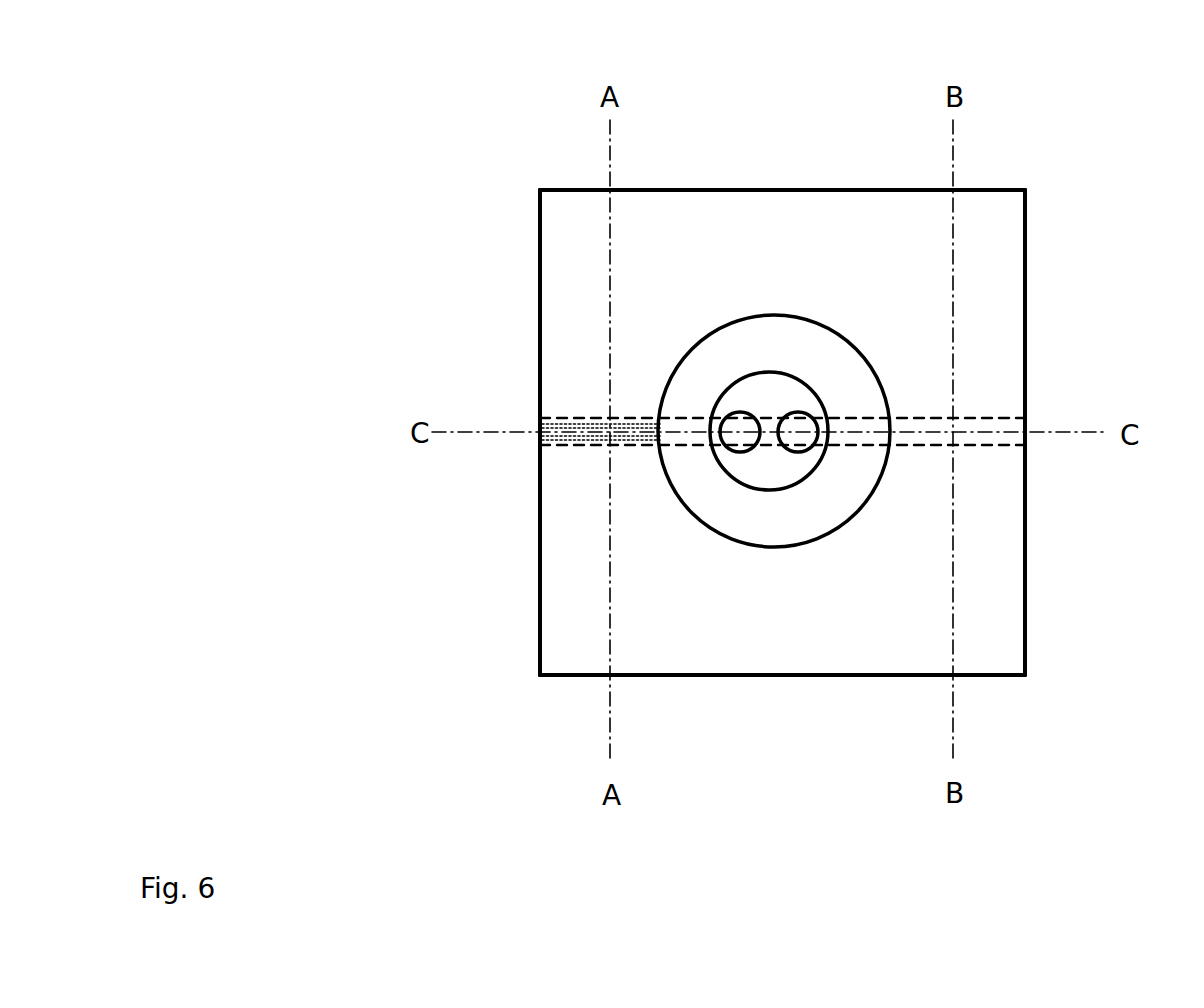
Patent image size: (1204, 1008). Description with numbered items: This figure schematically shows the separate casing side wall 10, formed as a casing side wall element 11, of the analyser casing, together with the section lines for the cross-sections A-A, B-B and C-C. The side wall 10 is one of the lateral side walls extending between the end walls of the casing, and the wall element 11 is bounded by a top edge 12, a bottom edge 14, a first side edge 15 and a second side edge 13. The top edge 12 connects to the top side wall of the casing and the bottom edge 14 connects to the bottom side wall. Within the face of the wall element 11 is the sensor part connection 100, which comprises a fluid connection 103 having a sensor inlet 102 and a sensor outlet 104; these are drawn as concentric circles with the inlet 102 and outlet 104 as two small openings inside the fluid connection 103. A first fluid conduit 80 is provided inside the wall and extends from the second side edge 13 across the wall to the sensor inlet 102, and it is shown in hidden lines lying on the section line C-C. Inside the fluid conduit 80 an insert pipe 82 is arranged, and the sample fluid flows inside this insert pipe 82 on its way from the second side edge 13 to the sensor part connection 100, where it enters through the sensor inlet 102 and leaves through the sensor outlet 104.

The side wall 10 is at (540, 190).
The wall element 11 is at (563, 265).
The top edge 12 is at (680, 190).
The second side edge 13 is at (540, 616).
The bottom edge 14 is at (1008, 678).
The first side edge 15 is at (1027, 232).
The first fluid conduit 80 is at (578, 418).
The insert pipe 82 is at (560, 438).
The sensor part connection 100 is at (793, 313).
The sensor inlet 102 is at (737, 442).
The fluid connection 103 is at (800, 377).
The sensor outlet 104 is at (795, 443).